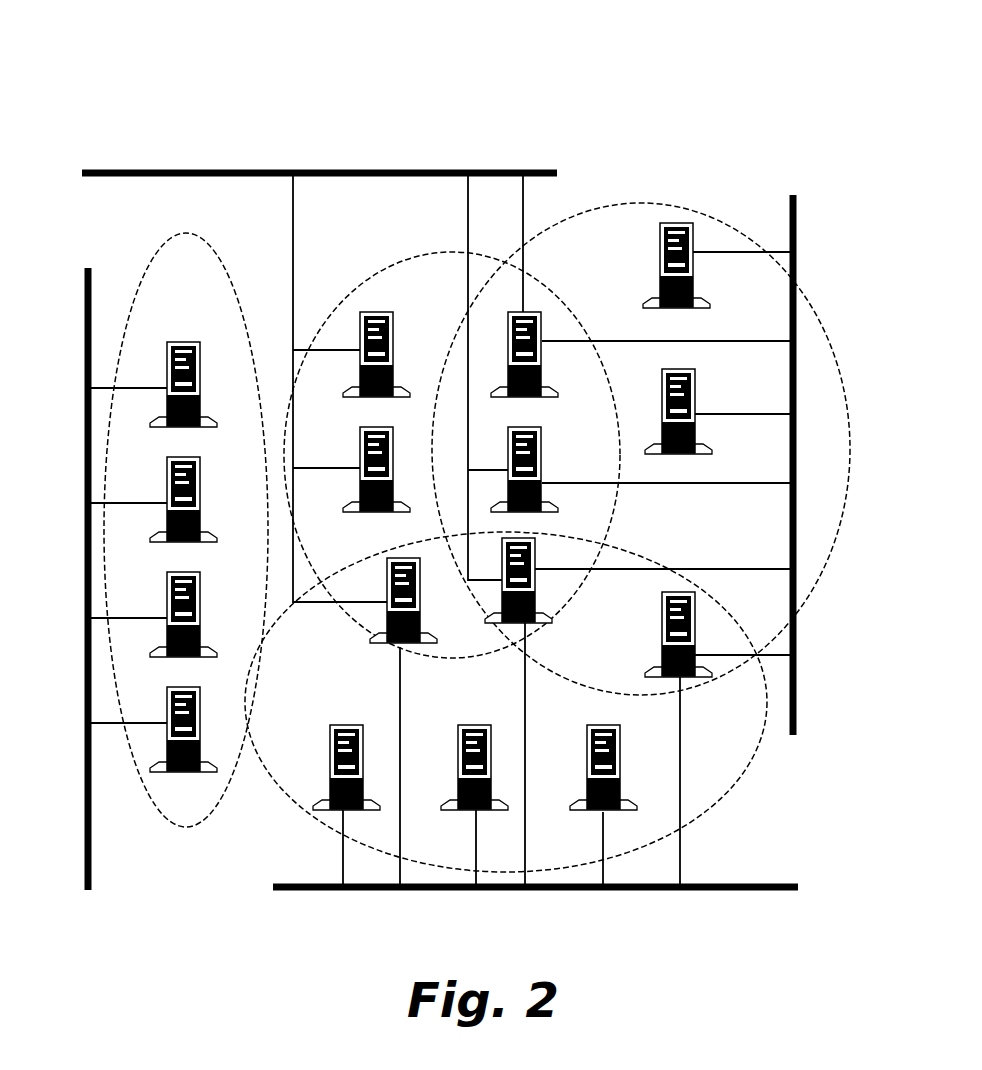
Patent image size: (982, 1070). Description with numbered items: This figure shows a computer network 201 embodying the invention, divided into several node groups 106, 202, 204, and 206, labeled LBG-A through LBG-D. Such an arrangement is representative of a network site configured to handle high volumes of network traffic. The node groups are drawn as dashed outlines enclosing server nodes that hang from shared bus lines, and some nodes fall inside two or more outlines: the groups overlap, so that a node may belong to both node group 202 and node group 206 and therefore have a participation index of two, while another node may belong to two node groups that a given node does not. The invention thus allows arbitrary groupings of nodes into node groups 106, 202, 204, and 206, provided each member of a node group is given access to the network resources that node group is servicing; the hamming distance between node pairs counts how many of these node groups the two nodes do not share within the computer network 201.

The computer network 201 is at (597, 79).
The node group 106 is at (172, 823).
The node group 202 is at (365, 283).
The node group 204 is at (660, 203).
The node group 206 is at (733, 780).